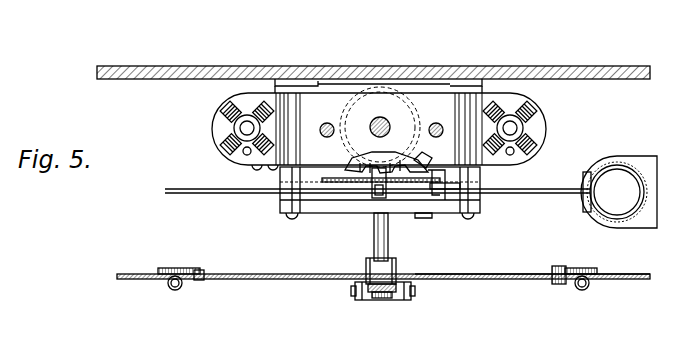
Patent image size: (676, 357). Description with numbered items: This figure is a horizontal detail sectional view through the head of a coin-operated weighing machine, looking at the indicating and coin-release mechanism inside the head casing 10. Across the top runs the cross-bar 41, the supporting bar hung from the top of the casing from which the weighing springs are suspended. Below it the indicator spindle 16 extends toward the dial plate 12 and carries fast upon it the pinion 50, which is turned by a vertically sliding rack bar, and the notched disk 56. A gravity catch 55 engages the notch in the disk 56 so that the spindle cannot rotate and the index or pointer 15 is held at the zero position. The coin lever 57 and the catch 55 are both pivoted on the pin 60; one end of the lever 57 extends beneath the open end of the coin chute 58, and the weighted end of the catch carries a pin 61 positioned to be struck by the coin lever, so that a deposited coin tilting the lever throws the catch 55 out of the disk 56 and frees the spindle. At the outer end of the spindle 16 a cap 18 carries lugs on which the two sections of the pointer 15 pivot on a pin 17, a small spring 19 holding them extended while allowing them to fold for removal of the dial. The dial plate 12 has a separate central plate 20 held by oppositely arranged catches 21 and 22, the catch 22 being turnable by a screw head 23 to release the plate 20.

The head casing 10 is at (409, 66).
The dial plate 12 is at (146, 278).
The index or pointer 15 is at (362, 298).
The spindle 16 is at (388, 250).
The pin 17 is at (414, 294).
The cap 18 is at (392, 275).
The spring 19 is at (385, 299).
The central plate 20 is at (512, 278).
The catch 21 is at (183, 270).
The catch 22 is at (600, 270).
The screw head 23 is at (561, 286).
The cross-bar 41 is at (393, 130).
The pinion 50 is at (424, 164).
The gravity catch 55 is at (434, 190).
The disk 56 is at (350, 184).
The coin lever 57 is at (530, 194).
The coin chute 58 is at (619, 192).
The pin 60 is at (425, 219).
The pin 61 is at (378, 196).